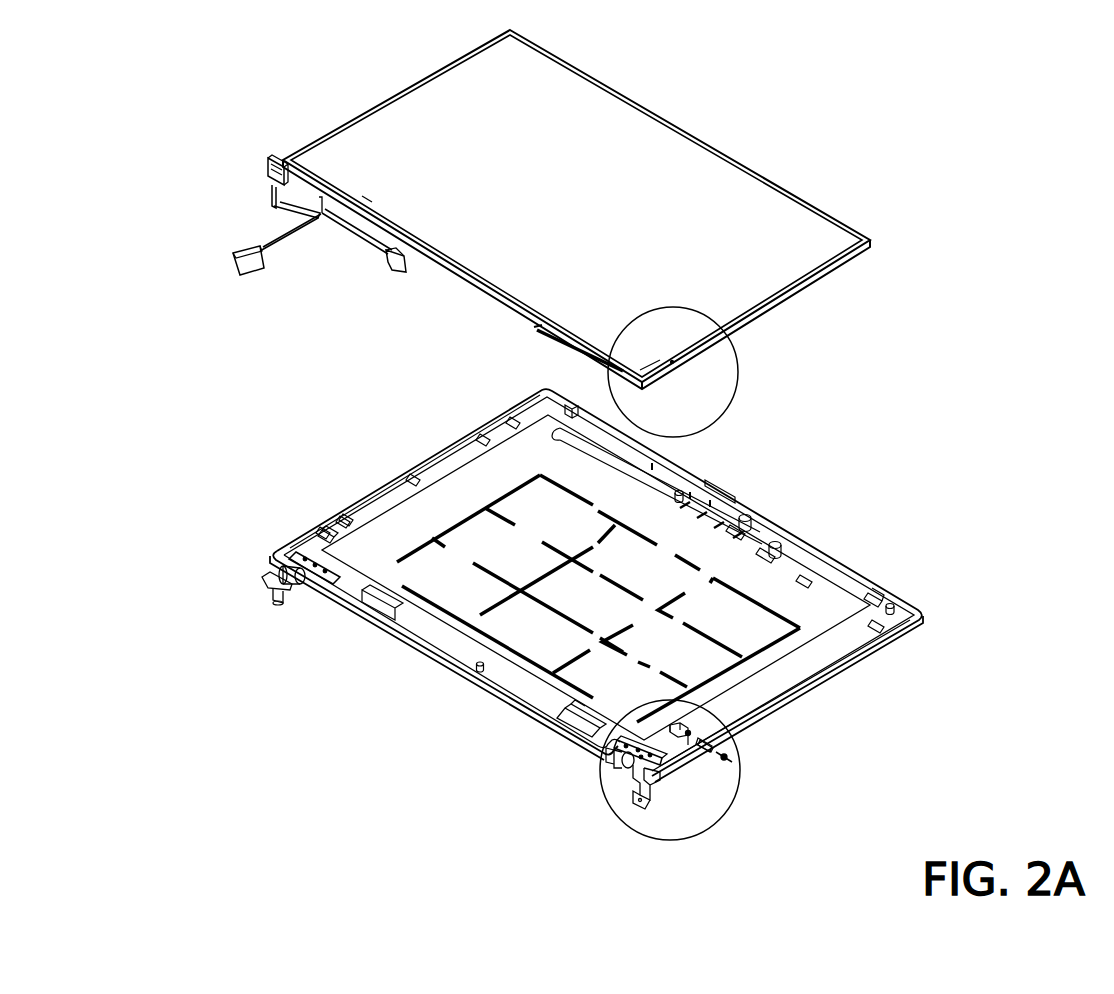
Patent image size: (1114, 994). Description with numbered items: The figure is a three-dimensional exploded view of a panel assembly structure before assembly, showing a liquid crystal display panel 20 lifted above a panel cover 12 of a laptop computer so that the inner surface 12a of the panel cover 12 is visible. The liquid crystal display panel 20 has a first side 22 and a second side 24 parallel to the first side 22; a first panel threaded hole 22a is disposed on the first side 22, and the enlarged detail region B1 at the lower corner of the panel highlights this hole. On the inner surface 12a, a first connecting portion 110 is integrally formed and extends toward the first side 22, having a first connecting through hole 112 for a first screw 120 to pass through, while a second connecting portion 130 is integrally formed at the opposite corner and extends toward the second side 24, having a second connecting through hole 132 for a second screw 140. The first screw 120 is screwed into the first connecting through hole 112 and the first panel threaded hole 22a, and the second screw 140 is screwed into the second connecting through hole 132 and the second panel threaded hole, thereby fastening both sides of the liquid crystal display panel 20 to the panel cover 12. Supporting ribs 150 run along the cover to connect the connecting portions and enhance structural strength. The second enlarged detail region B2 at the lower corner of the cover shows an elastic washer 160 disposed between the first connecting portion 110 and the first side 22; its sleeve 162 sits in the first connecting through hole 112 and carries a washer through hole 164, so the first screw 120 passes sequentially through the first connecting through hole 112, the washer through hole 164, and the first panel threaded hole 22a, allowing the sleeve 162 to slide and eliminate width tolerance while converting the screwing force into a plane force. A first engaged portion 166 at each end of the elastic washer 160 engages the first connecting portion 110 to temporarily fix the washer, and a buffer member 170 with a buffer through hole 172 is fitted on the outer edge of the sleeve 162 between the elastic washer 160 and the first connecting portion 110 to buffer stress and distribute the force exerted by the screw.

The panel cover 12 is at (770, 500).
The inner surface 12a is at (843, 625).
The liquid crystal display panel 20 is at (745, 110).
The first side 22 is at (797, 293).
The first panel threaded hole 22a is at (672, 361).
The second side 24 is at (395, 97).
The first connecting portion 110 is at (723, 747).
The first connecting through hole 112 is at (730, 760).
The first screw 120 is at (735, 765).
The second connecting portion 130 is at (298, 542).
The second connecting through hole 132 is at (343, 520).
The second screw 140 is at (328, 527).
The supporting ribs 150 is at (450, 455).
The elastic washer 160 is at (680, 703).
The sleeve 162 is at (575, 735).
The washer through hole 164 is at (662, 785).
The first engaged portion 166 is at (622, 755).
The buffer member 170 is at (697, 728).
The buffer through hole 172 is at (688, 728).
The detail region B1 is at (733, 403).
The detail region B2 is at (670, 837).